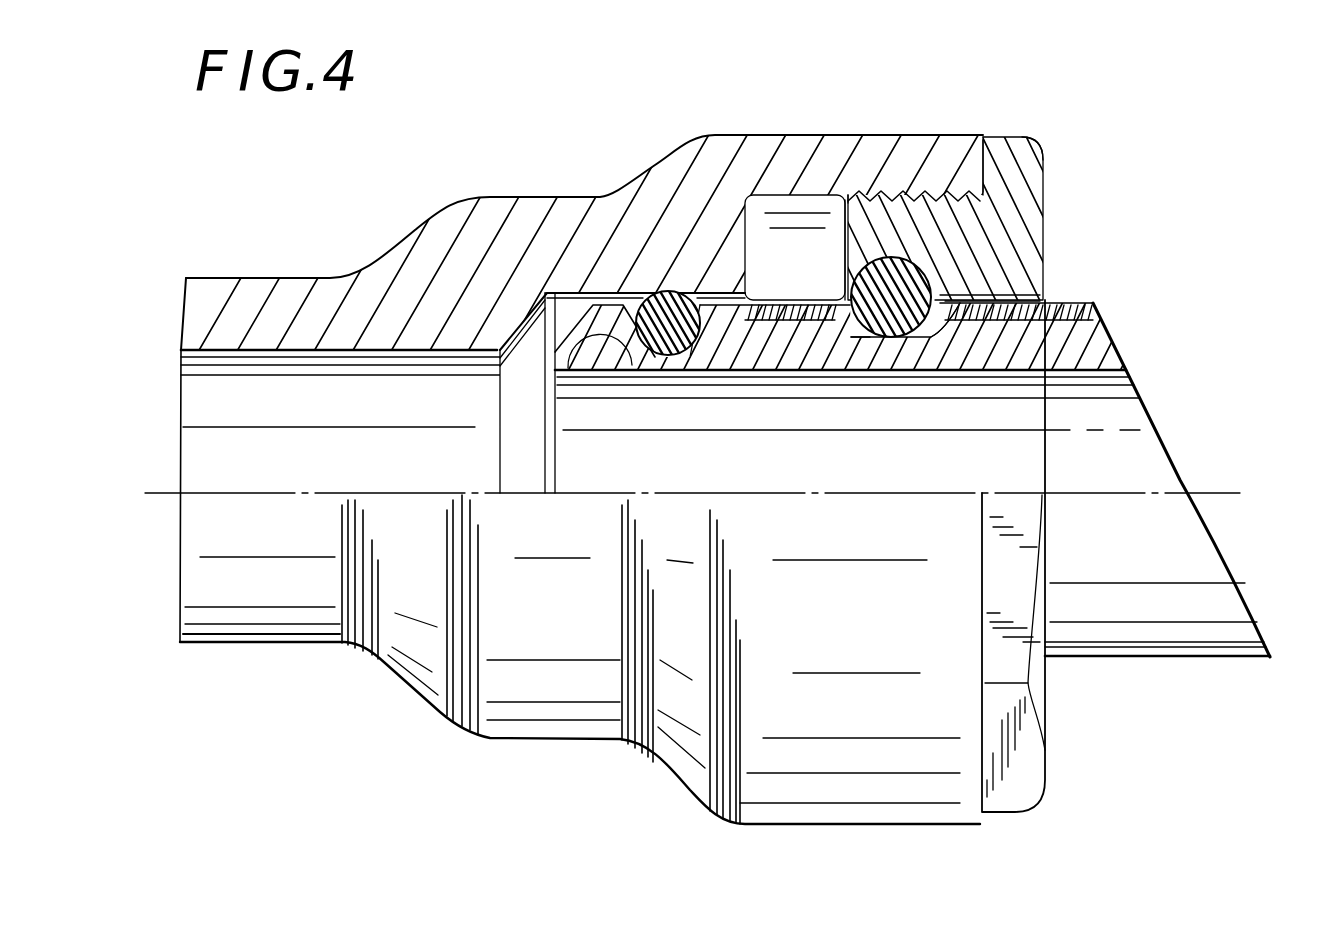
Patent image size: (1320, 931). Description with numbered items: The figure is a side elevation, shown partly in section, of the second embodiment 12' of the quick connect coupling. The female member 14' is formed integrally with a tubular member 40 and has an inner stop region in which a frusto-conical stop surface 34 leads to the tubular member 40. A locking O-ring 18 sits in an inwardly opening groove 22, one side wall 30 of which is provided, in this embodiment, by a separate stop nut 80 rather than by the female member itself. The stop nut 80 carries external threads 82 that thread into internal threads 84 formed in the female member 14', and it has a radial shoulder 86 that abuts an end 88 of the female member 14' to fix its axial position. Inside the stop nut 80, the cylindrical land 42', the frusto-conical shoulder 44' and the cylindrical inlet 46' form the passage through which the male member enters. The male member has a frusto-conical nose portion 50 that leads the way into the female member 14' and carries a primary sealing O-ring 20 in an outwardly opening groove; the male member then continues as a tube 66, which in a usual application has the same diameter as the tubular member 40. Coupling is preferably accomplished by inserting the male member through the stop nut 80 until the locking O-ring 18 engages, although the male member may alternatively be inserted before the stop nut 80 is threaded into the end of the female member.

The female member 14' is at (679, 211).
The quick connect coupling (second embodiment) 12' is at (920, 125).
The internal threads 84 is at (850, 197).
The external threads 82 is at (928, 140).
The end 88 is at (985, 155).
The radial shoulder 86 is at (1022, 148).
The stop nut 80 is at (1052, 200).
The cylindrical land 42' is at (910, 277).
The frusto-conical shoulder 44' is at (961, 293).
The cylindrical inlet 46' is at (1039, 271).
The groove 22 is at (816, 266).
The side wall 30 is at (836, 237).
The frusto-conical stop surface 34 is at (530, 337).
The frusto-conical nose portion 50 is at (550, 441).
The tubular member 40 is at (348, 470).
The primary sealing O-ring 20 is at (680, 358).
The locking O-ring 18 is at (890, 338).
The tube 66 is at (1056, 470).